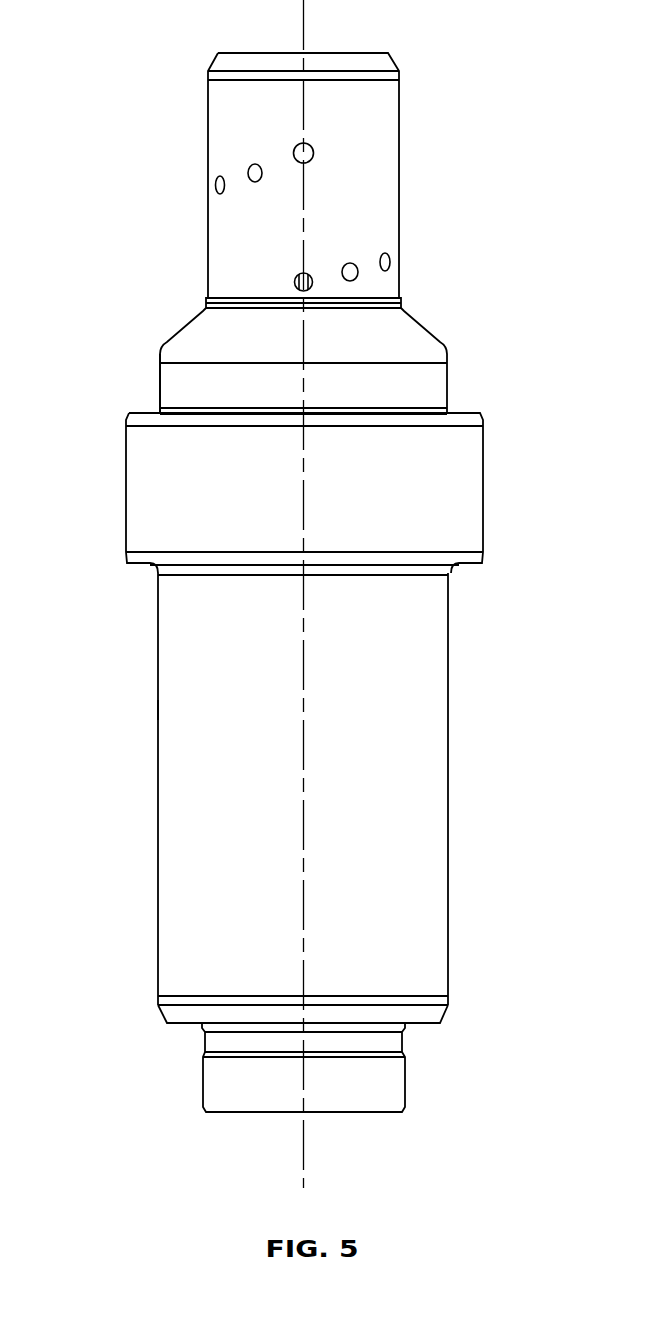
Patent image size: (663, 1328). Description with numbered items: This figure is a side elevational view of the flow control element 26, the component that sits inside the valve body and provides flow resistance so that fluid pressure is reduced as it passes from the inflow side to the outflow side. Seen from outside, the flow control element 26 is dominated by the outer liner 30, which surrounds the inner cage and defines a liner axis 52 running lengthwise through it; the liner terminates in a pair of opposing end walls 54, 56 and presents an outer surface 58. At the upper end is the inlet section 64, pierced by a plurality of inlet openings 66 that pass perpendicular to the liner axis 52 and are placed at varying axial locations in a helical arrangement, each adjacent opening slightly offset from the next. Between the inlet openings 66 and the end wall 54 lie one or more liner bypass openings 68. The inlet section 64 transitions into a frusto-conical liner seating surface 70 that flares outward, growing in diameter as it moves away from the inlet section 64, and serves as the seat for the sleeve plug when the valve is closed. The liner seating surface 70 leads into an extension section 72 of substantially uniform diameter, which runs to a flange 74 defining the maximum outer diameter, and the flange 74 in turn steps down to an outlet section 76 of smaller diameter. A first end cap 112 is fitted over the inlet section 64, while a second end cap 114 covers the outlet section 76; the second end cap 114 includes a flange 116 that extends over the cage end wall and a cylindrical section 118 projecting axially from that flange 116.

The flow control element 26 is at (527, 75).
The outer liner 30 is at (142, 381).
The liner axis 52 is at (304, 1133).
The end wall 54 is at (369, 80).
The end wall 56 is at (423, 997).
The outer surface 58 is at (328, 723).
The inlet section 64 is at (392, 182).
The inlet openings 66 is at (256, 181).
The liner bypass openings 68 is at (294, 149).
The liner seating surface 70 is at (395, 330).
The extension section 72 is at (425, 387).
The flange 74 is at (455, 462).
The outlet section 76 is at (424, 792).
The first end cap 112 is at (244, 46).
The second end cap 114 is at (181, 1035).
The flange 116 is at (417, 1020).
The cylindrical section 118 is at (388, 1077).